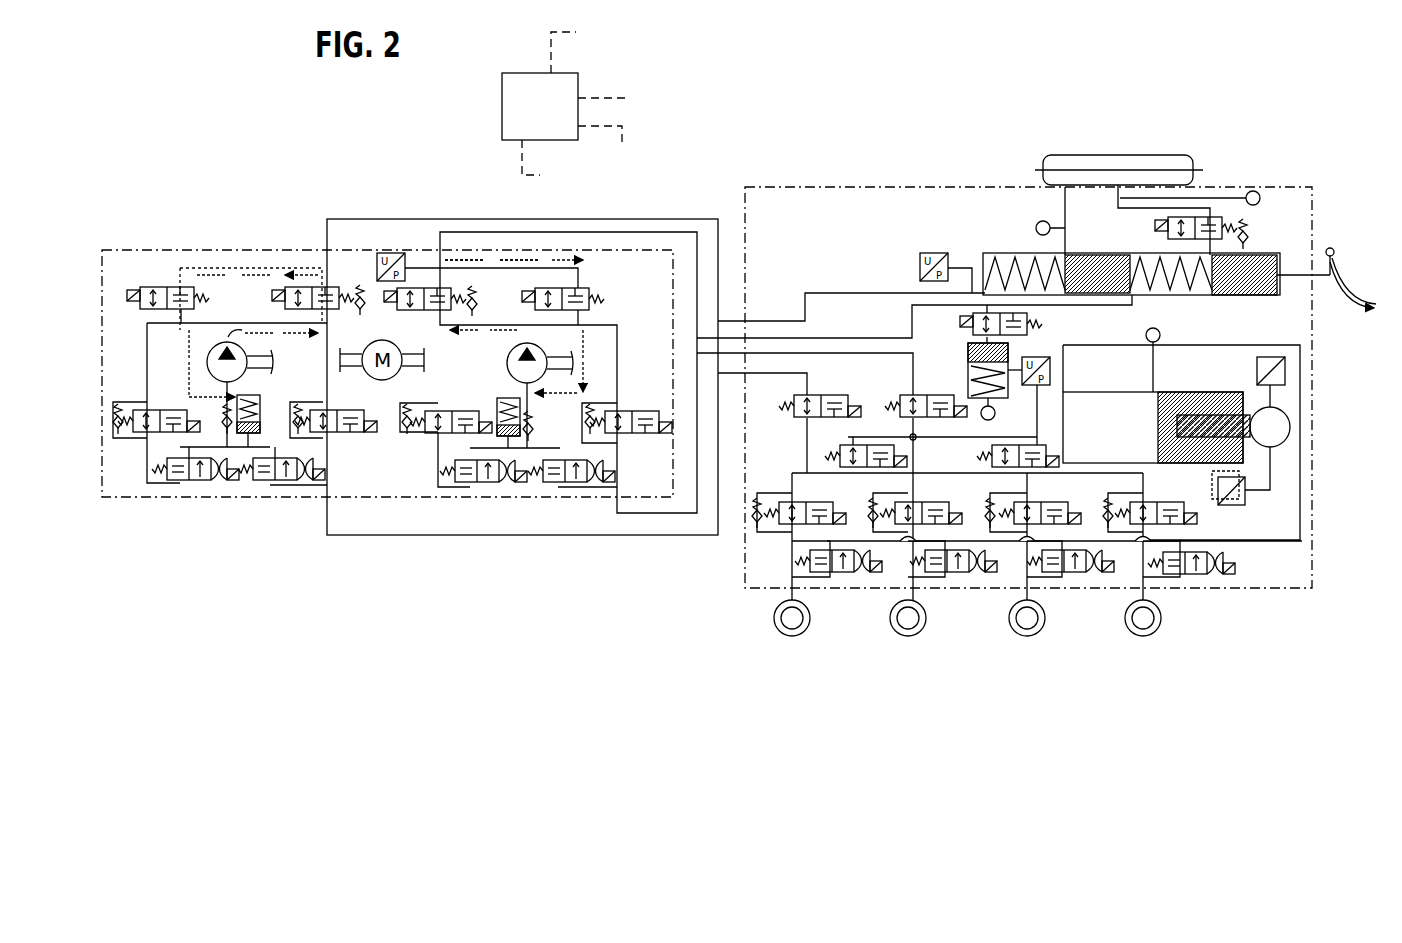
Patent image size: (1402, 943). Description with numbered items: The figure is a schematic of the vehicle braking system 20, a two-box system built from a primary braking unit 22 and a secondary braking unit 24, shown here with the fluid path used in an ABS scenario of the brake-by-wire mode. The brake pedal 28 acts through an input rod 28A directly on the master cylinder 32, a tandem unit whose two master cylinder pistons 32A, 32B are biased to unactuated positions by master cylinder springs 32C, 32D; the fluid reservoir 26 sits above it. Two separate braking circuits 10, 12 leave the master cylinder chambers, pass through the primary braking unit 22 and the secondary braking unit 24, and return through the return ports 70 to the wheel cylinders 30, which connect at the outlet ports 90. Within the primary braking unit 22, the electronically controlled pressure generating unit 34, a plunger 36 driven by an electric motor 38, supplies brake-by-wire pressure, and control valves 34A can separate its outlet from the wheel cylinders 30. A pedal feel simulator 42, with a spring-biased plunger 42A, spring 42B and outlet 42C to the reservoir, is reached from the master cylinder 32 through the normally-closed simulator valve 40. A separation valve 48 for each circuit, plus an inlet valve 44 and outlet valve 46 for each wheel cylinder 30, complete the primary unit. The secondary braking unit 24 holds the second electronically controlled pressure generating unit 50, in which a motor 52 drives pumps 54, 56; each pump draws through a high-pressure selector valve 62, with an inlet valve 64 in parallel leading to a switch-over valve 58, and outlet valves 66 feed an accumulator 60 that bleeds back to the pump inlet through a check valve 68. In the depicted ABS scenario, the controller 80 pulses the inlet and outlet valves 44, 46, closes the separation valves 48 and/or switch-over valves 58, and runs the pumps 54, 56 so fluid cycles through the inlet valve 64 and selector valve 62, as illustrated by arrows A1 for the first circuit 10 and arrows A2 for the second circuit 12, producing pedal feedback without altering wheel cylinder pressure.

The vehicle braking system 20 is at (758, 46).
The controller 80 is at (563, 103).
The secondary braking unit 24 is at (156, 244).
The first circuit arrows A1 is at (462, 250).
The second circuit arrows A2 is at (243, 262).
The primary braking unit 22 is at (798, 180).
The second braking circuit 12 is at (816, 303).
The first braking circuit 10 is at (1064, 312).
The return ports 70 is at (697, 350).
The high-pressure selector valve 62 is at (158, 287).
The inlet valve 64 is at (285, 300).
The first pump 54 is at (243, 345).
The second electronically controlled pressure generating unit 50 is at (392, 325).
The motor 52 is at (378, 383).
The second pump 56 is at (547, 357).
The switch-over valve 58 is at (150, 410).
The accumulator 60 is at (262, 405).
The check valve 68 is at (222, 425).
The outlet valve 66 is at (190, 482).
The simulator valve 40 is at (960, 322).
The pedal feel simulator 42 is at (972, 382).
The spring-biased plunger 42A is at (968, 350).
The spring 42B is at (975, 383).
The outlet 42C is at (1004, 410).
The separation valve 48 is at (818, 398).
The control valves 34A is at (842, 453).
The inlet valve 44 is at (800, 502).
The outlet valve 46 is at (840, 573).
The wheel cylinder 30 is at (782, 601).
The outlet ports 90 is at (790, 600).
The fluid reservoir 26 is at (1120, 152).
The master cylinder 32 is at (1109, 221).
The master cylinder spring 32D is at (1006, 254).
The master cylinder piston 32B is at (1088, 258).
The master cylinder spring 32C is at (1190, 292).
The master cylinder piston 32A is at (1248, 290).
The brake pedal 28 is at (1327, 285).
The input rod 28A is at (1308, 290).
The plunger 36 is at (1161, 392).
The electric motor 38 is at (1256, 410).
The electronically controlled pressure generating unit 34 is at (1283, 495).